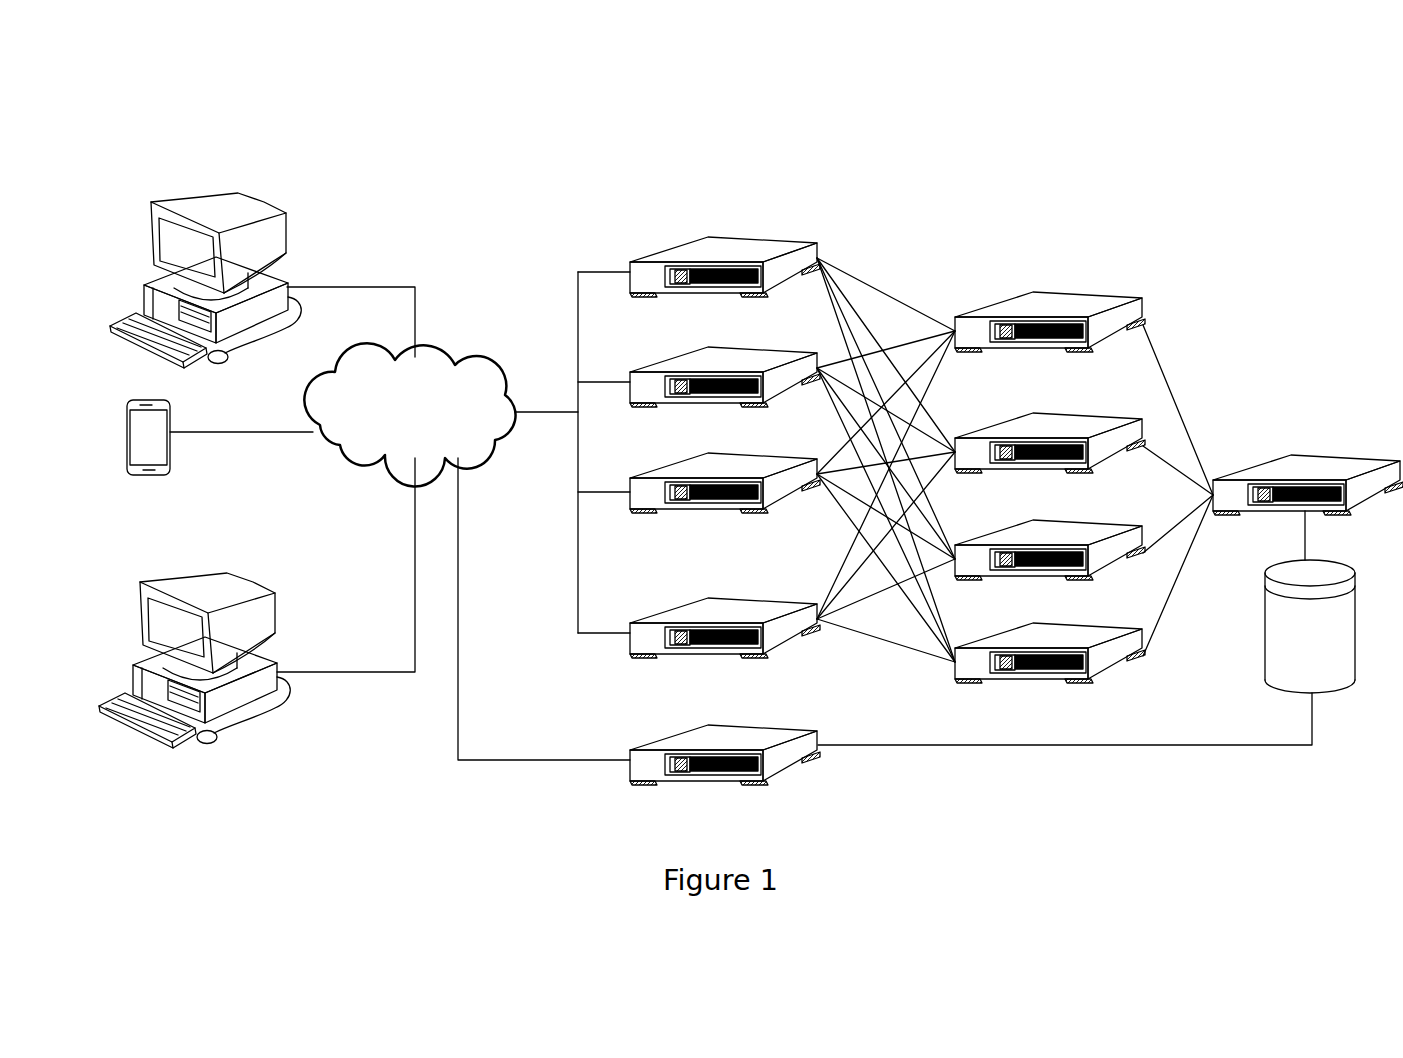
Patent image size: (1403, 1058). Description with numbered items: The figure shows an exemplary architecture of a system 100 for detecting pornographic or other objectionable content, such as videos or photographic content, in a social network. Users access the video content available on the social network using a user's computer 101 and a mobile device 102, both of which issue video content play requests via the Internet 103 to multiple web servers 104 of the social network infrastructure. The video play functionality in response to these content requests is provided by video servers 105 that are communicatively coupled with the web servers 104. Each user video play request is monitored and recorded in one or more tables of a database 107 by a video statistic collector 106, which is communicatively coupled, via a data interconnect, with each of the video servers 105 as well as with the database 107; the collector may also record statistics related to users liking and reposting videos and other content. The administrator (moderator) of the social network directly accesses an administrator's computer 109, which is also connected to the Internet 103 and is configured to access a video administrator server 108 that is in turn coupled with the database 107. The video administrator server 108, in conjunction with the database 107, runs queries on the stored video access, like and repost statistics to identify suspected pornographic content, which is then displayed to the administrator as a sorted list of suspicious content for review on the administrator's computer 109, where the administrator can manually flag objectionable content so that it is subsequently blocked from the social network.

The system 100 is at (956, 188).
The user's computer 101 is at (238, 192).
The mobile device 102 is at (166, 403).
The Internet 103 is at (470, 357).
The web server 104 is at (800, 238).
The video server 105 is at (1128, 296).
The video statistic collector 106 is at (1250, 512).
The database 107 is at (1265, 678).
The video administrator server 108 is at (765, 783).
The administrator's computer 109 is at (258, 578).